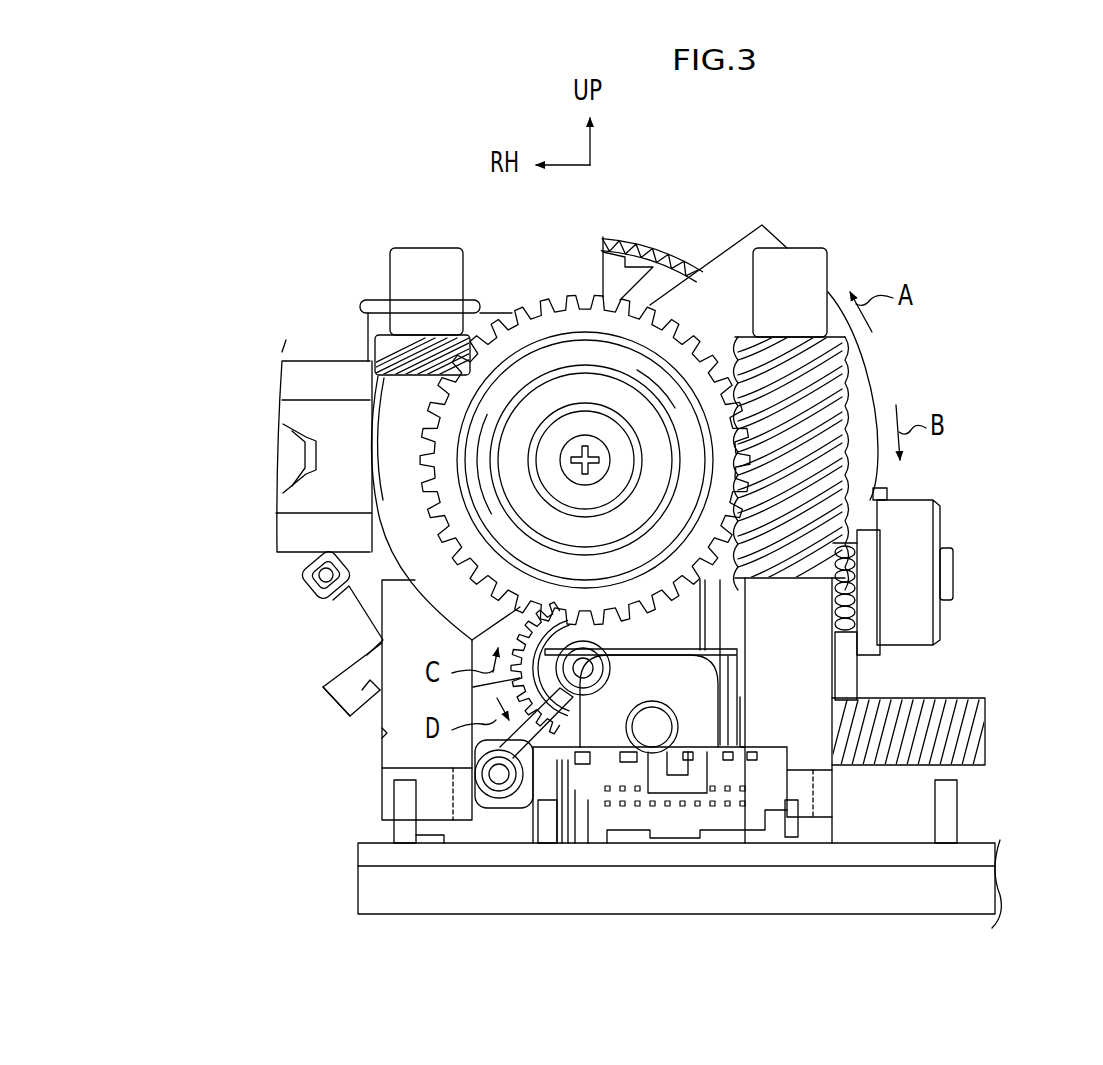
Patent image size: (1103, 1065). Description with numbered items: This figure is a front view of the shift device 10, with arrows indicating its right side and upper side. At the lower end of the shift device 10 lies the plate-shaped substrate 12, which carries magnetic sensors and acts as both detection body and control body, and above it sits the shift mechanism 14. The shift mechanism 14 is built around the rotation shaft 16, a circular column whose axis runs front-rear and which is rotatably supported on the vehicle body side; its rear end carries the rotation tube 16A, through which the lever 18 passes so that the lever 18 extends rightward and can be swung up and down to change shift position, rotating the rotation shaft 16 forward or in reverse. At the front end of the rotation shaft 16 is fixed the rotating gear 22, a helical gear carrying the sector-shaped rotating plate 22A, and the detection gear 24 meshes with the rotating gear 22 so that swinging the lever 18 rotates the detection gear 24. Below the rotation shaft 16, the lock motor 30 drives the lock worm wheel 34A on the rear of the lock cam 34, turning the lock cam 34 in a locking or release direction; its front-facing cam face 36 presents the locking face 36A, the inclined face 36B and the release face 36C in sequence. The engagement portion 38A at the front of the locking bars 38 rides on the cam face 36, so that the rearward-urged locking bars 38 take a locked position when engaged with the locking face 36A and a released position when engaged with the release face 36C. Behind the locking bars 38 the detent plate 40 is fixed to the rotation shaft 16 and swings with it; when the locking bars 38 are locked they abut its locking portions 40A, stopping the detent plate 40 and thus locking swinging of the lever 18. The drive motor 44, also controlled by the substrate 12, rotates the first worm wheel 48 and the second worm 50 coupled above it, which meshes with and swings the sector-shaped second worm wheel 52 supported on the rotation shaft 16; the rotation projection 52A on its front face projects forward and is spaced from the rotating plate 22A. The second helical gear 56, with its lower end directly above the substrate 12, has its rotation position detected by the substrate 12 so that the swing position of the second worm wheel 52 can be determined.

The shift device 10 is at (324, 242).
The substrate 12 is at (975, 843).
The shift mechanism 14 is at (512, 710).
The rotation shaft 16 is at (560, 410).
The rotation tube 16A is at (484, 300).
The lever 18 is at (308, 361).
The rotating gear 22 is at (570, 292).
The rotating plate 22A is at (764, 224).
The detection gear 24 is at (830, 250).
The lock motor 30 is at (938, 502).
The lock cam 34 is at (505, 607).
The lock worm wheel 34A is at (668, 613).
The cam face 36 is at (645, 642).
The locking face 36A is at (590, 684).
The inclined face 36B is at (520, 678).
The release face 36C is at (505, 635).
The locking bars 38 is at (497, 808).
The engagement portion 38A is at (563, 688).
The detent plate 40 is at (355, 652).
The locking portions 40A is at (325, 697).
The drive motor 44 is at (700, 655).
The first worm wheel 48 is at (985, 740).
The second worm 50 is at (856, 586).
The second worm wheel 52 is at (684, 268).
The rotation projection 52A is at (620, 240).
The second helical gear 56 is at (404, 248).